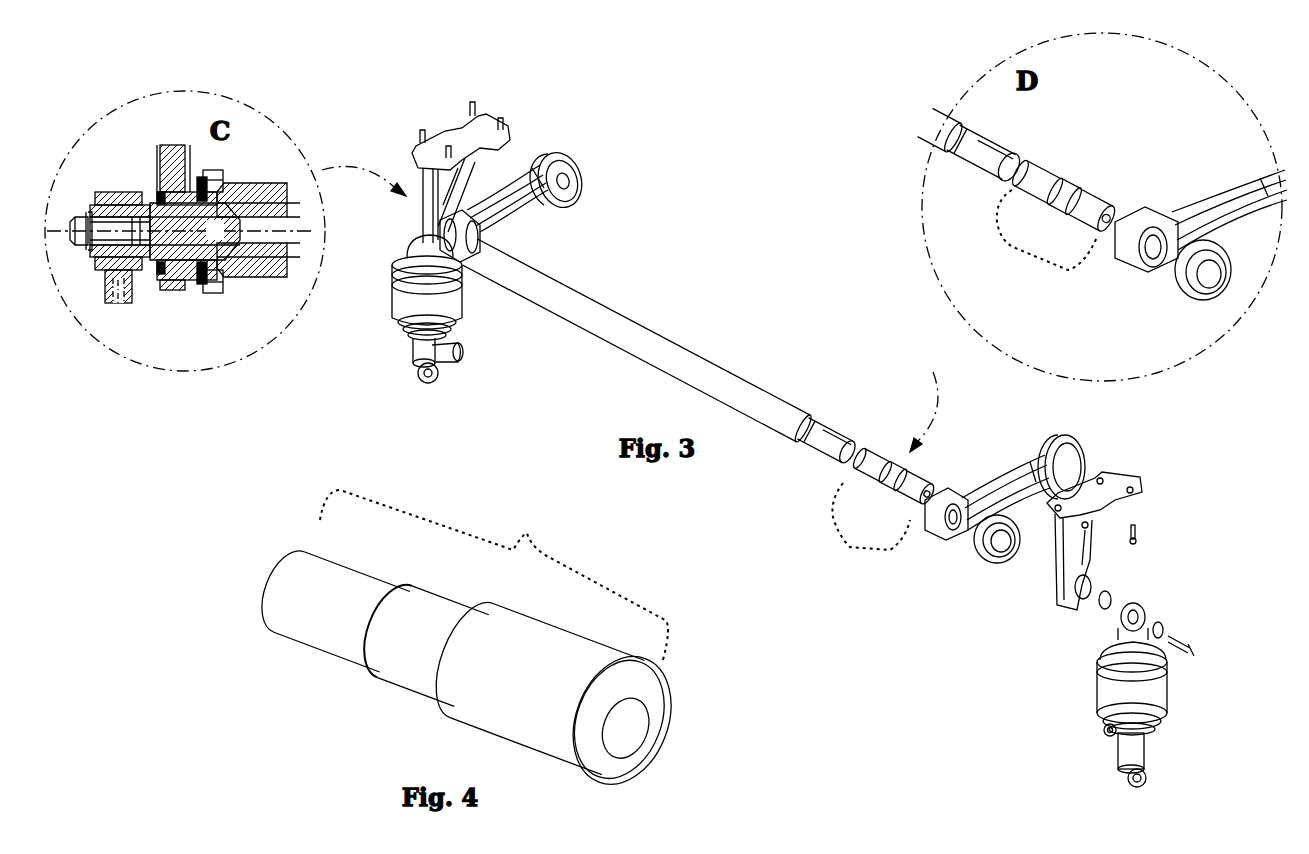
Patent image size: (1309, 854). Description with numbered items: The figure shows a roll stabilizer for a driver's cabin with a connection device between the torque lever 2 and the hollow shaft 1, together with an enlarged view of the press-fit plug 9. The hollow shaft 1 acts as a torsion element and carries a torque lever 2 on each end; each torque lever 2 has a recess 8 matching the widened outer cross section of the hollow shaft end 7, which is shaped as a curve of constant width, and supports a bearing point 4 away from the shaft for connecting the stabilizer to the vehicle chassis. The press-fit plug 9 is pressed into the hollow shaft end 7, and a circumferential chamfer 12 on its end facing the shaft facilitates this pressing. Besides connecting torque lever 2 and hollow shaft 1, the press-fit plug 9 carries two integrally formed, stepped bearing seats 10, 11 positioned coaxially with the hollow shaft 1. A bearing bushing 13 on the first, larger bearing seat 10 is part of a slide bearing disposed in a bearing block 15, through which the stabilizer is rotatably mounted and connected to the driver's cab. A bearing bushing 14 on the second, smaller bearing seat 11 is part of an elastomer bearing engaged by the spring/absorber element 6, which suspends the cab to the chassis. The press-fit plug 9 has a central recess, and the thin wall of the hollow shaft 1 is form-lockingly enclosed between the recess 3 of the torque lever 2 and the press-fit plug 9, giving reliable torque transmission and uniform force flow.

In FIG. 3, the hollow shaft 1 is at (640, 338).
In FIG. 3, the torque lever 2 is at (518, 214).
In FIG. 3, the recess 3 is at (245, 270).
In FIG. 3, the bearing point 4 is at (587, 181).
In FIG. 3, the spring/absorber element 6 is at (368, 320).
In FIG. 3, the hollow shaft end 7 is at (810, 474).
In FIG. 3, the recess 8 is at (956, 519).
In FIG. 3, the press-fit plug 9 is at (623, 370).
In FIG. 4, the press-fit plug 9 is at (494, 575).
In FIG. 3, the first bearing seat 10 is at (888, 478).
In FIG. 4, the first bearing seat 10 is at (400, 662).
In FIG. 3, the second bearing seat 11 is at (908, 490).
In FIG. 4, the second bearing seat 11 is at (322, 625).
In FIG. 4, the circumferential chamfer 12 is at (590, 704).
In FIG. 3, the bearing bushing 13 is at (185, 197).
In FIG. 3, the bearing bushing 14 is at (118, 258).
In FIG. 3, the bearing block 15 is at (481, 129).